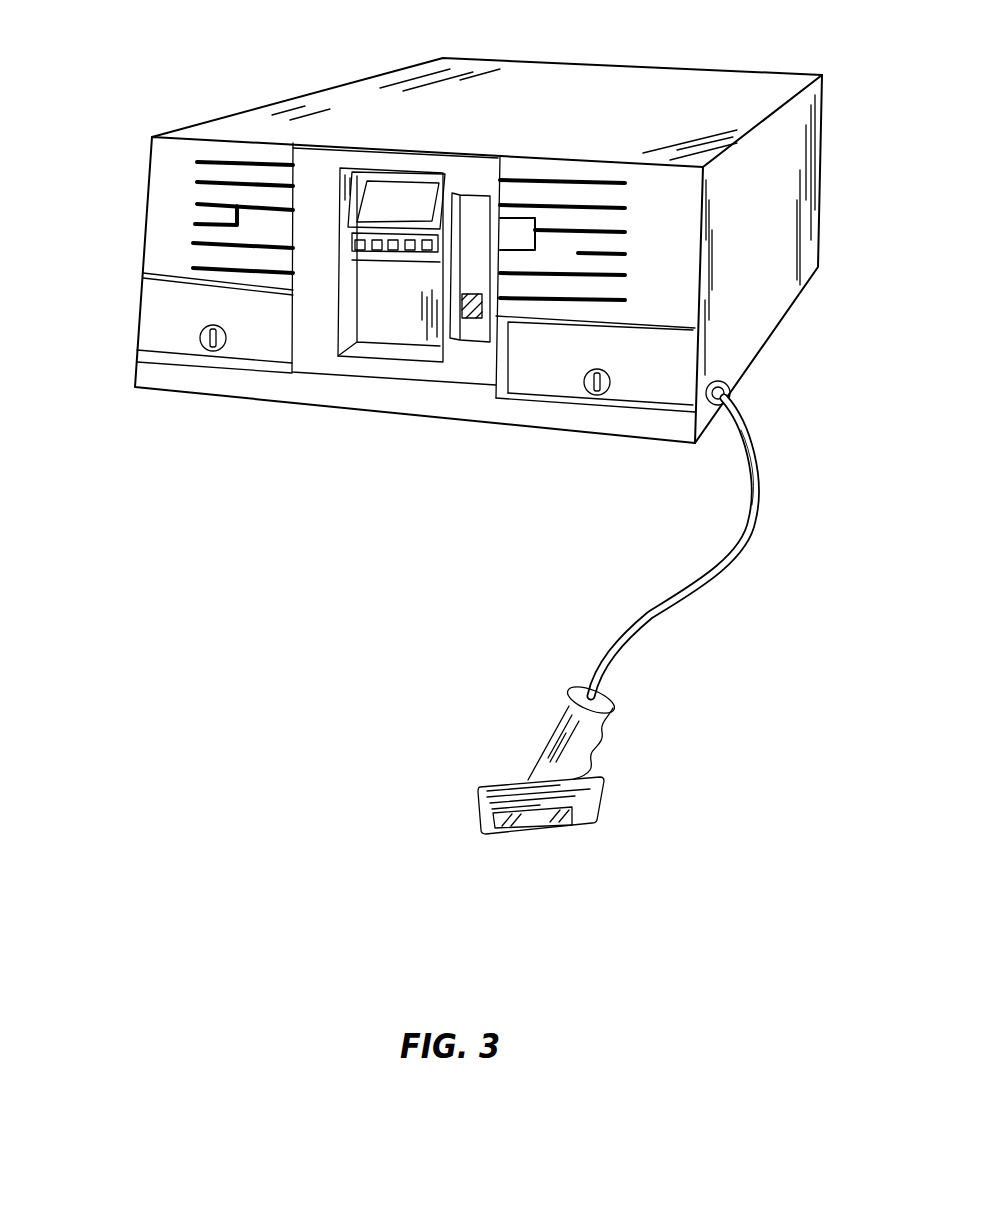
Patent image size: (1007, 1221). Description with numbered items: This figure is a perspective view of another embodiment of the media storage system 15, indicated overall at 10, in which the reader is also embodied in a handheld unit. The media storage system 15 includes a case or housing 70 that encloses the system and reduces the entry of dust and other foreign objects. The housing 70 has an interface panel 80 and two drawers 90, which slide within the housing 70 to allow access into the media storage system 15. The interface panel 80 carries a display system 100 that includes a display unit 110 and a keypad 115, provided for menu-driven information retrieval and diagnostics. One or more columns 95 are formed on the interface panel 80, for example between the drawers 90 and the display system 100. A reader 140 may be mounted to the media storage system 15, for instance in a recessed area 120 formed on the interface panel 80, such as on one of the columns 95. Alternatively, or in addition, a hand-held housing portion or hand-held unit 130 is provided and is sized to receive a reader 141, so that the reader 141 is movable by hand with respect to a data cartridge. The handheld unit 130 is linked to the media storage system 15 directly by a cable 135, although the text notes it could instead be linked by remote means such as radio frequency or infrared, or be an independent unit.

The heated wire cutting apparatus / housing 10 is at (708, 58).
The media storage system 15 is at (278, 104).
The housing 70 is at (550, 132).
The interface panel 80 is at (172, 319).
The drawers 90 is at (224, 363).
The columns 95 is at (458, 149).
The display system 100 is at (377, 315).
The display unit 110 is at (415, 214).
The keypad 115 is at (363, 253).
The recessed area 120 is at (478, 192).
The hand-held housing portion 130 is at (510, 789).
The cable 135 is at (670, 590).
The reader 140 is at (472, 320).
The reader 141 is at (533, 830).